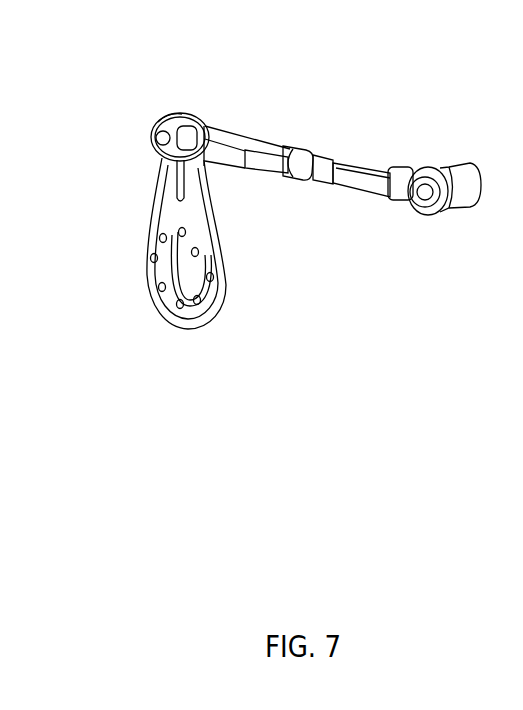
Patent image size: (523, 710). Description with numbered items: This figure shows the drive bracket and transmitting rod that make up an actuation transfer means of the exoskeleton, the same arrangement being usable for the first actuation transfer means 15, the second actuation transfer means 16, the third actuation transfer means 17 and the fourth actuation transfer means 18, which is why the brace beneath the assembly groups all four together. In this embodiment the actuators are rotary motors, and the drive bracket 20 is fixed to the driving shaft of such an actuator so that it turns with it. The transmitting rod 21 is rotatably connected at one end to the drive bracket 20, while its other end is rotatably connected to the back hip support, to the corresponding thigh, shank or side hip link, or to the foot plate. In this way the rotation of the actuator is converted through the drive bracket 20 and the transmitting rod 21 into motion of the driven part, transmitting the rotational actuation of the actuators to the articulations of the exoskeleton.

The first actuation transfer means 15 is at (480, 385).
The second actuation transfer means 16 is at (305, 296).
The third actuation transfer means 17 is at (365, 300).
The fourth actuation transfer means 18 is at (419, 300).
The drive bracket 20 is at (150, 235).
The transmitting rod 21 is at (307, 151).